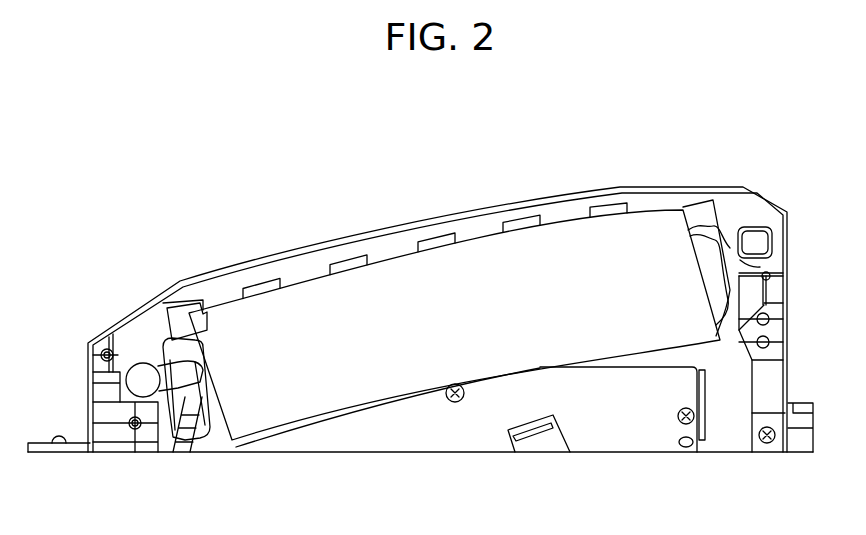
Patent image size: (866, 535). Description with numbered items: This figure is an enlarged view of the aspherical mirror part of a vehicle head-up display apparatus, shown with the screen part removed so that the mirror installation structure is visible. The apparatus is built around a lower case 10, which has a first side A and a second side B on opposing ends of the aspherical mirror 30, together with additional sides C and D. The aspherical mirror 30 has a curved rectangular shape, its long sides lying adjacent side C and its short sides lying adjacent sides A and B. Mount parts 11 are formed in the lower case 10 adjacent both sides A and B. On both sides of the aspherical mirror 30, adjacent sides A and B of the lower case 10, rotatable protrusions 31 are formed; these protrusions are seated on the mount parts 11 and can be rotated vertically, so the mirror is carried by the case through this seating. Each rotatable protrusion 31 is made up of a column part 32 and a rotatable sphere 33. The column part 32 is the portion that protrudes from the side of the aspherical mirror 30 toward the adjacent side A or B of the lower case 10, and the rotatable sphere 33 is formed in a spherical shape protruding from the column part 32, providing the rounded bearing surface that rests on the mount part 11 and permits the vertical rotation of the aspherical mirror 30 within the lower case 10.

The lower case 10 is at (302, 267).
The mount parts 11 is at (148, 413).
The aspherical mirror 30 is at (468, 297).
The rotatable protrusions 31 is at (135, 355).
The column part 32 is at (160, 372).
The rotatable sphere 33 is at (752, 238).
The first side A is at (88, 382).
The second side B is at (788, 347).
The side C is at (533, 200).
The side D is at (432, 453).